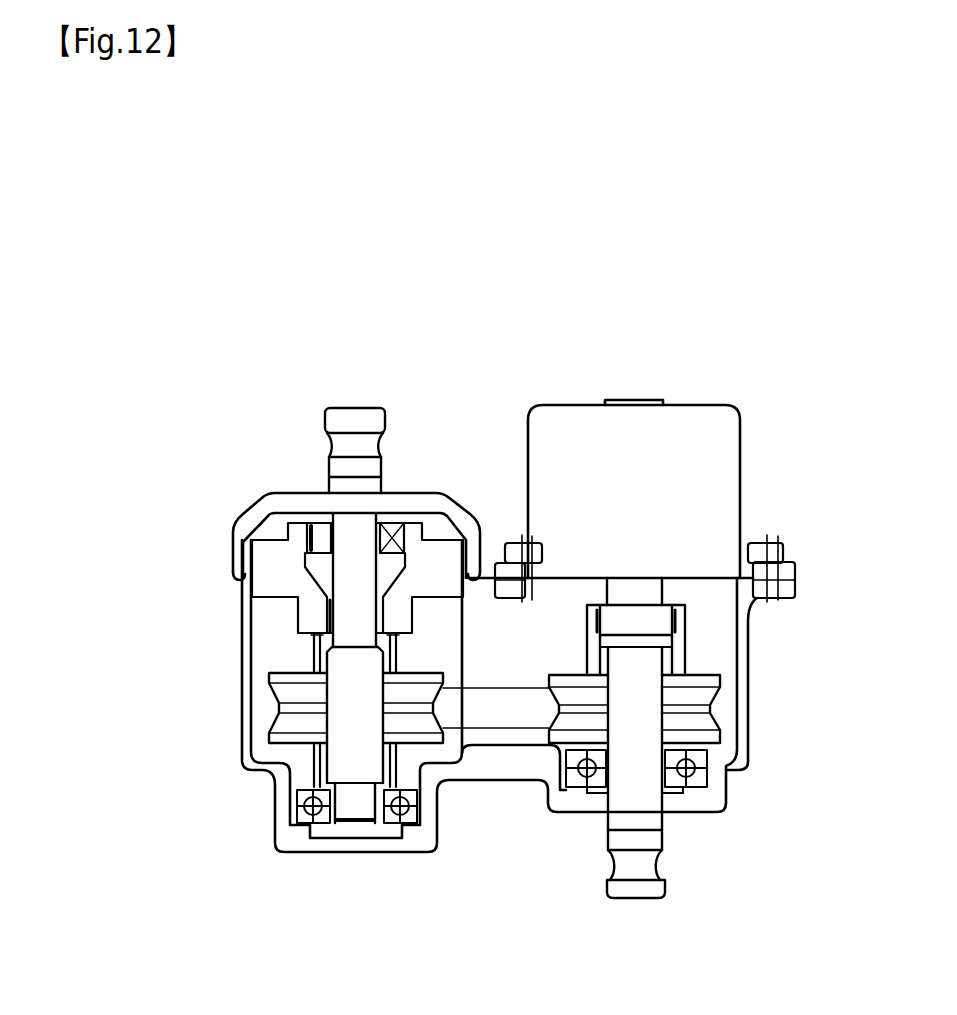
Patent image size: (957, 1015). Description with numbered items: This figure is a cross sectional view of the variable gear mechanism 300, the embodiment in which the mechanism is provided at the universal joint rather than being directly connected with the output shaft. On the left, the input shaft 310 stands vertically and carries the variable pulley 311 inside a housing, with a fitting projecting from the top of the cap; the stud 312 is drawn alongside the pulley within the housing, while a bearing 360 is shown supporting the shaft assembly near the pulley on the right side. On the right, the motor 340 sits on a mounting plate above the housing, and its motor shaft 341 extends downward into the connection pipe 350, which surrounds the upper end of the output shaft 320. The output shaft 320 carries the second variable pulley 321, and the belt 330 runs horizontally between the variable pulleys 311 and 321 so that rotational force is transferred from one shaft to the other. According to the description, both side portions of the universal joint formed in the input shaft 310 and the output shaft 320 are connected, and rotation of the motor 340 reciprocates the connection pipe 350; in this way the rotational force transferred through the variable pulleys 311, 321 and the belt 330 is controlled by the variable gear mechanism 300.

The variable gear mechanism 300 is at (468, 366).
The input shaft 310 is at (345, 412).
The variable pulley 311 is at (297, 712).
The fixing stud bolt 312 is at (314, 650).
The output shaft 320 is at (637, 860).
The variable pulley 321 is at (693, 700).
The belt 330 is at (488, 717).
The motor 340 is at (720, 427).
The motor shaft 341 is at (638, 617).
The connection pipe 350 is at (675, 650).
The bearing 360 is at (595, 673).